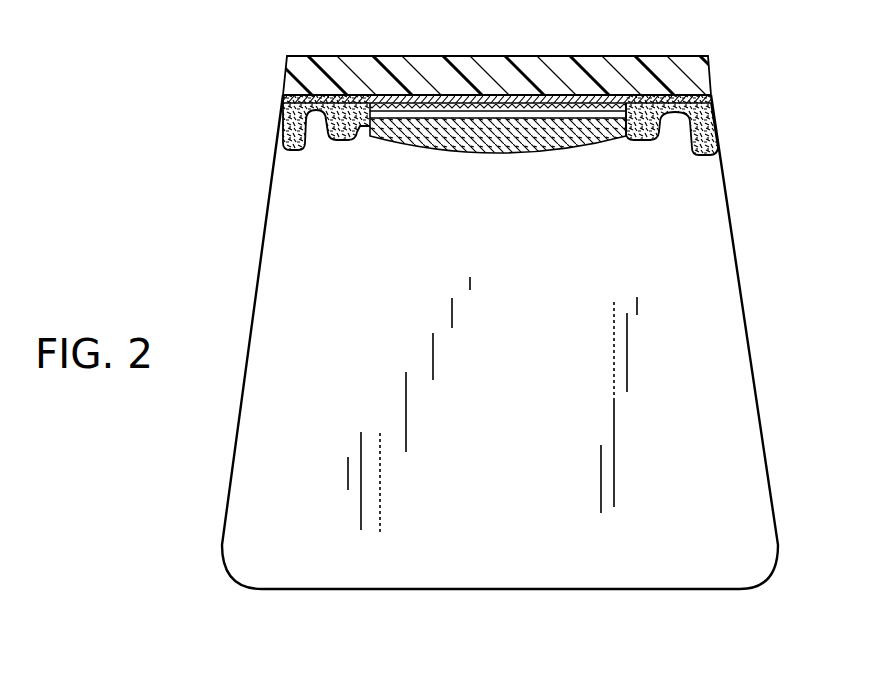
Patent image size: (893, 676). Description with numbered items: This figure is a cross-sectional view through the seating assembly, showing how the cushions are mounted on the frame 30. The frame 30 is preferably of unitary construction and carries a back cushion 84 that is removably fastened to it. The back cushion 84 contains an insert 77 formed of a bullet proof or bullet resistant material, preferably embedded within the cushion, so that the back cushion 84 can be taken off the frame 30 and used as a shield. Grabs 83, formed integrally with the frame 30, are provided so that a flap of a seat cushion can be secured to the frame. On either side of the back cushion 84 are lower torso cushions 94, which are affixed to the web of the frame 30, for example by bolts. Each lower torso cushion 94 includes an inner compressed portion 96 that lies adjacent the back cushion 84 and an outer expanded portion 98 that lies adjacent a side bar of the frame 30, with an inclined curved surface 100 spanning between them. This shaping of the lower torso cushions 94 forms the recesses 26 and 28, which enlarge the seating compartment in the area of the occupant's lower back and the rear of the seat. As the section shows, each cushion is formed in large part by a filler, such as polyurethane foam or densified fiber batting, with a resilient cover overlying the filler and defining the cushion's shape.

The frame 30 is at (702, 80).
The back cushion 84 is at (557, 103).
The insert 77 is at (438, 116).
The grabs 83 is at (532, 156).
The lower torso cushions 94 is at (283, 133).
The outer expanded portion 98 is at (282, 116).
The recess 26 is at (321, 145).
The recess 28 is at (668, 146).
The inclined curved surface 100 is at (333, 121).
The inner compressed portion 96 is at (360, 134).